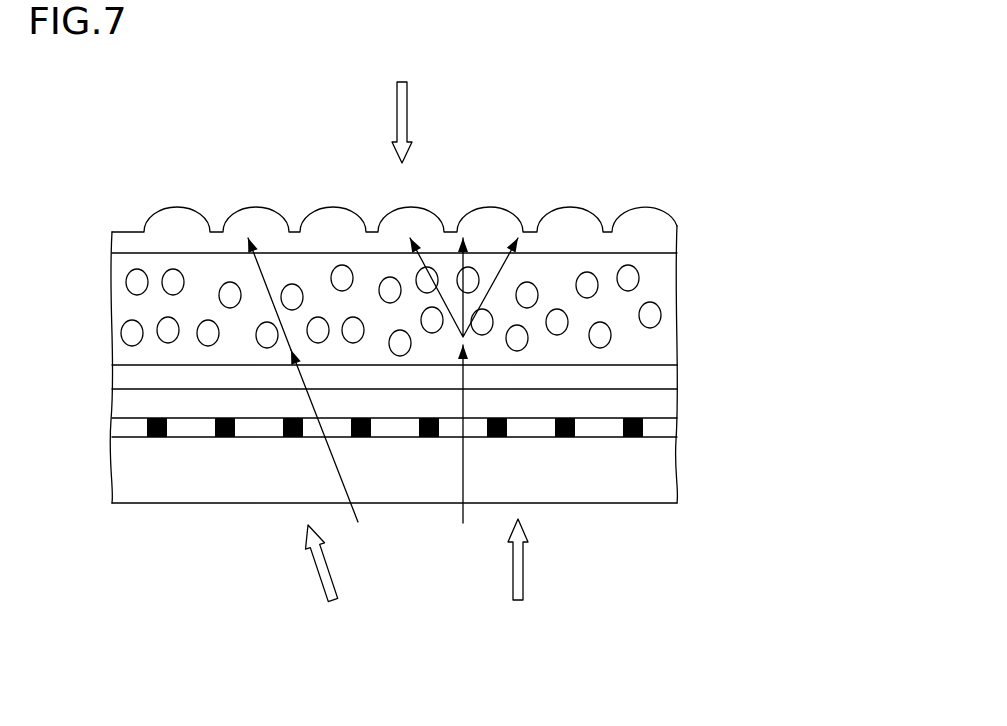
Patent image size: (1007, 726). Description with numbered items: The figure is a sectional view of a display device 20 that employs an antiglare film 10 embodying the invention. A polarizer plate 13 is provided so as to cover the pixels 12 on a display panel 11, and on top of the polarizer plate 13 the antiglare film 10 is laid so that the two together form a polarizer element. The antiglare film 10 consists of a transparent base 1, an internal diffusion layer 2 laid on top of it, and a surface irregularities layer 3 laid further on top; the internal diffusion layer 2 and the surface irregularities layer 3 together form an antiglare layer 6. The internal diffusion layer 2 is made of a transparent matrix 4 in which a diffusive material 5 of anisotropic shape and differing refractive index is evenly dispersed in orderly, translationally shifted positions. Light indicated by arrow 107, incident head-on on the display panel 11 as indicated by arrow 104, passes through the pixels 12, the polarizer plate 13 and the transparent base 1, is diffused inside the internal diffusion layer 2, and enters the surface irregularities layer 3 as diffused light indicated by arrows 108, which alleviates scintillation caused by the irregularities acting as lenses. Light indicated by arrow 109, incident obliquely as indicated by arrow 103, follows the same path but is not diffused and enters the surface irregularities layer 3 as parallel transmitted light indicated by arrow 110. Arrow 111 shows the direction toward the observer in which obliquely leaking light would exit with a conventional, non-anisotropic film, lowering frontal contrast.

The transparent base 1 is at (665, 375).
The internal diffusion layer 2 is at (723, 270).
The surface irregularities layer 3 is at (665, 233).
The transparent matrix 4 is at (652, 285).
The diffusive material 5 is at (657, 315).
The antiglare layer 6 is at (753, 213).
The antiglare film 10 is at (792, 245).
The display panel 11 is at (657, 463).
The pixels 12 is at (665, 428).
The polarizer plate 13 is at (665, 403).
The display device 20 is at (845, 292).
The arrow indicating obliquely incident light 103 is at (305, 564).
The arrow indicating head-on incident light 104 is at (540, 559).
The arrow indicating head-on light 107 is at (463, 523).
The arrows indicating diffused light 108 is at (413, 236).
The arrow indicating oblique light 109 is at (358, 522).
The arrow indicating parallel transmitted light 110 is at (253, 246).
The arrow indicating light exiting toward observer 111 is at (427, 122).